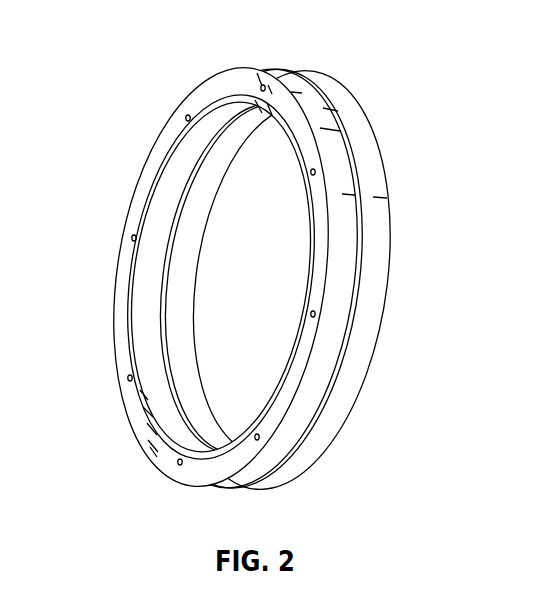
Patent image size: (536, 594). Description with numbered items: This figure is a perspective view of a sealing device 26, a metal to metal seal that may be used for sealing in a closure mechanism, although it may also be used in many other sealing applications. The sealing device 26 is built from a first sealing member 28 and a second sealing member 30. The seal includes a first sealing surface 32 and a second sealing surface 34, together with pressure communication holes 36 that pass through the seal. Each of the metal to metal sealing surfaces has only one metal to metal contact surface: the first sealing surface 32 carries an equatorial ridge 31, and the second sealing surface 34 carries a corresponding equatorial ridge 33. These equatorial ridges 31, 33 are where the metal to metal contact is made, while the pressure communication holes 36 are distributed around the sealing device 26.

The sealing device 26 is at (258, 265).
The first sealing member 28 is at (144, 177).
The second sealing member 30 is at (390, 233).
The equatorial ridge 31 is at (333, 390).
The first sealing surface 32 is at (372, 320).
The equatorial ridge 33 is at (163, 303).
The second sealing surface 34 is at (147, 352).
The pressure communication holes 36 is at (313, 314).